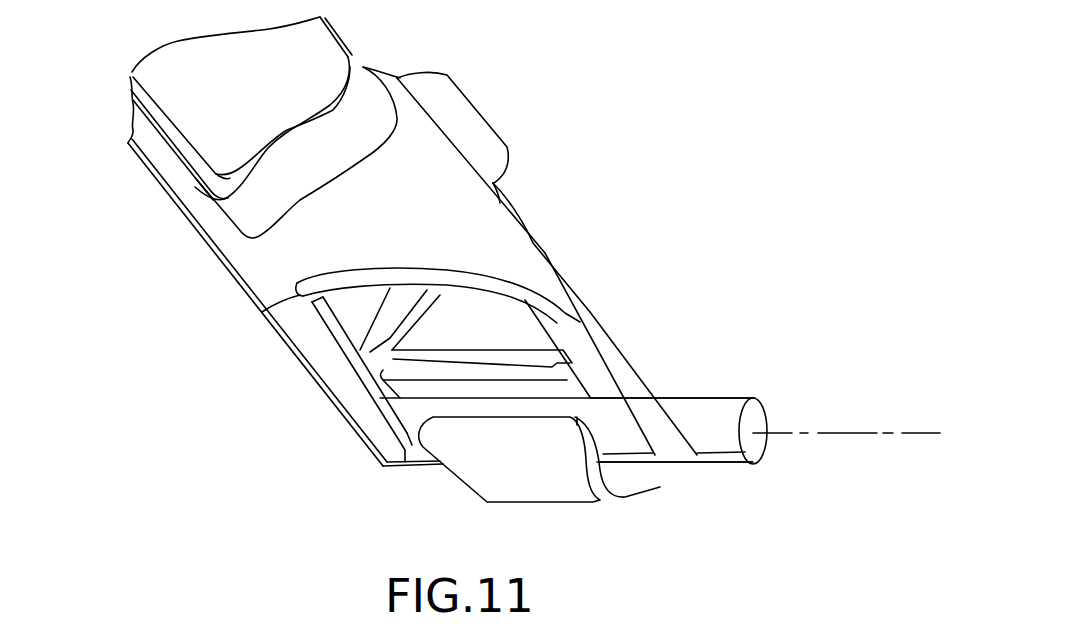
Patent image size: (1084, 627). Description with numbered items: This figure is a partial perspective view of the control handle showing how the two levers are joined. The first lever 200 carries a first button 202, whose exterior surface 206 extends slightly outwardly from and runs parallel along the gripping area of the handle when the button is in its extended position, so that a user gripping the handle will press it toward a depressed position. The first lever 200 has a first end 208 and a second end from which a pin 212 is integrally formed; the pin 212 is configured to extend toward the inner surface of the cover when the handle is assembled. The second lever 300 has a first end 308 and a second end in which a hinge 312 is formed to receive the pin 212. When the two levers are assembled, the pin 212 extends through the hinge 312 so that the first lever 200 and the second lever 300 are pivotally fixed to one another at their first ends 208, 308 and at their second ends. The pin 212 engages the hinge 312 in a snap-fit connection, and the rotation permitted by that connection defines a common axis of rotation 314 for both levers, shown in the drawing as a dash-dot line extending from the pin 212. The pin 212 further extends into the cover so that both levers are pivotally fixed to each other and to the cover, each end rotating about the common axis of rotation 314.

The first lever 200 is at (307, 255).
The first button 202 is at (235, 212).
The exterior surface 206 is at (175, 82).
The first end 208 is at (338, 383).
The pin 212 is at (713, 410).
The second lever 300 is at (495, 327).
The first end 308 is at (518, 325).
The hinge 312 is at (497, 462).
The common axis of rotation 314 is at (852, 433).